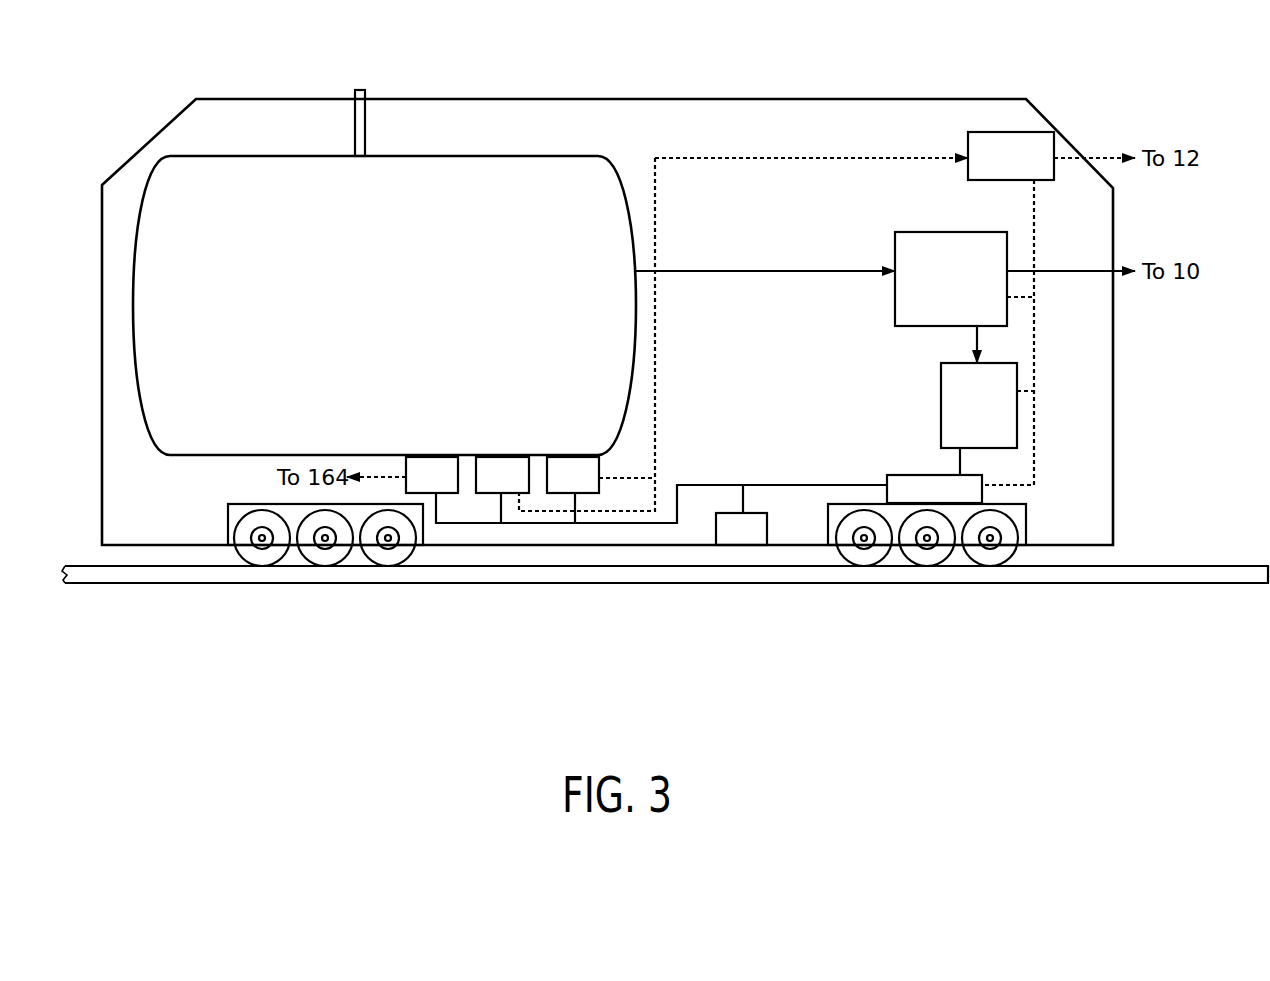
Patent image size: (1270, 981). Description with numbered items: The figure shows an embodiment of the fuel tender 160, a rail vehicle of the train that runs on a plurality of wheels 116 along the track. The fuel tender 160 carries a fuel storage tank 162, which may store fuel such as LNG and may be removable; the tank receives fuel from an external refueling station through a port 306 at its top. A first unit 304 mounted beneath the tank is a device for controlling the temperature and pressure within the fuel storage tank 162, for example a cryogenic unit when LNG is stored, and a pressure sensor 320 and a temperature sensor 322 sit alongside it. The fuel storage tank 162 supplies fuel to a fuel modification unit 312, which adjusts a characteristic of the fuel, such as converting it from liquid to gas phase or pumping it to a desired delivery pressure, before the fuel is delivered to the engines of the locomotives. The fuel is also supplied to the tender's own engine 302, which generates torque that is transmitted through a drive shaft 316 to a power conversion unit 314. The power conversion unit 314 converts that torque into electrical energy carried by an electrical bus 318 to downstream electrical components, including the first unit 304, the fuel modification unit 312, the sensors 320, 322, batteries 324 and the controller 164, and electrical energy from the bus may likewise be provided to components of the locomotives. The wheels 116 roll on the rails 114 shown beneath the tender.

The fuel tender 160 is at (247, 98).
The port 306 is at (366, 147).
The fuel storage tank 162 is at (396, 312).
The controller 164 is at (1029, 168).
The fuel modification unit 312 is at (969, 290).
The engine 302 is at (996, 415).
The power conversion unit 314 is at (953, 501).
The drive shaft 316 is at (959, 473).
The electrical bus 318 is at (716, 485).
The first unit 304 is at (450, 489).
The pressure sensor 320 is at (520, 489).
The temperature sensor 322 is at (591, 489).
The batteries 324 is at (759, 542).
The wheels 116 is at (979, 562).
The rail track 114 is at (1175, 584).